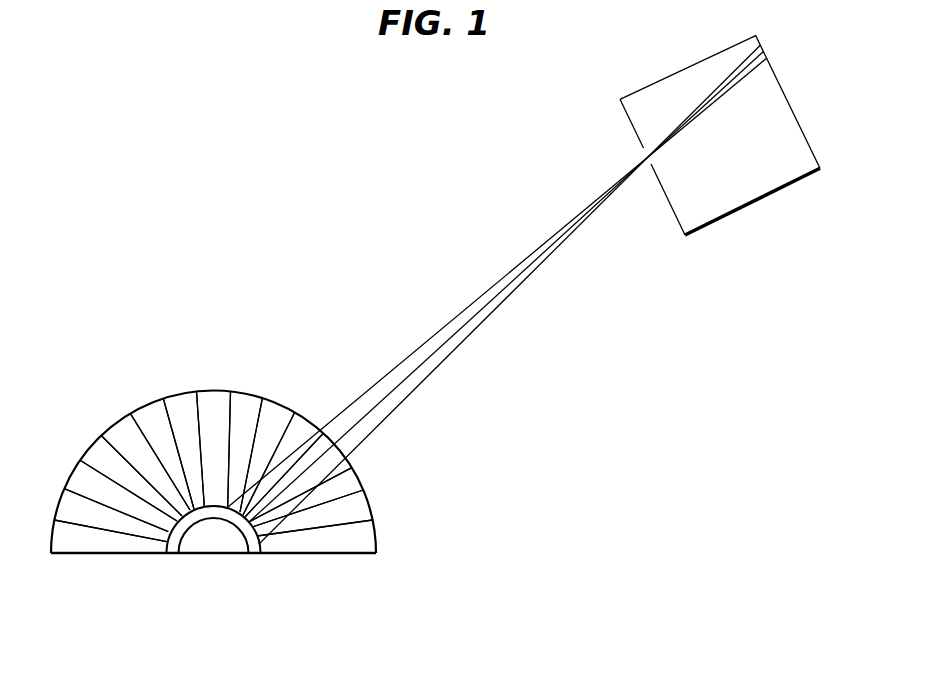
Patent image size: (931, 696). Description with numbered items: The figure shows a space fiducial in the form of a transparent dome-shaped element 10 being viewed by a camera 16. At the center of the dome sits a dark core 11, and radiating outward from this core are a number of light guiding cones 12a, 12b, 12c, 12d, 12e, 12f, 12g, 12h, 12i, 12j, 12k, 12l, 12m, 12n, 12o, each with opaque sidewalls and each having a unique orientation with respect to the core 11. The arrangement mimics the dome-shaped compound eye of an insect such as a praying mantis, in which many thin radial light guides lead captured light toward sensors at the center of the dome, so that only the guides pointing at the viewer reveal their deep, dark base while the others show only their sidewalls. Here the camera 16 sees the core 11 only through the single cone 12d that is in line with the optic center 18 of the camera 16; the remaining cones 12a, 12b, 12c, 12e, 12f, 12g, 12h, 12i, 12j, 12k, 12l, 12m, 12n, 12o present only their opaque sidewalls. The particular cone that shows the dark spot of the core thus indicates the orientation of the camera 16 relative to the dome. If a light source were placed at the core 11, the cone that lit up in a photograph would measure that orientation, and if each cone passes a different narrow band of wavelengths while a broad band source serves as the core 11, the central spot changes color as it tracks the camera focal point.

The transparent dome-shaped element 10 is at (131, 338).
The core 11 is at (246, 541).
The light guiding cone 12a is at (377, 538).
The light guiding cone 12b is at (358, 500).
The light guiding cone 12c is at (348, 479).
The light guiding cone 12d is at (322, 440).
The light guiding cone 12e is at (283, 464).
The light guiding cone 12f is at (267, 456).
The light guiding cone 12g is at (245, 451).
The light guiding cone 12h is at (214, 448).
The light guiding cone 12i is at (183, 450).
The light guiding cone 12j is at (162, 455).
The light guiding cone 12k is at (145, 464).
The light guiding cone 12l is at (131, 479).
The light guiding cone 12m is at (76, 476).
The light guiding cone 12n is at (65, 503).
The light guiding cone 12o is at (68, 545).
The camera 16 is at (757, 202).
The optic center 18 is at (647, 156).